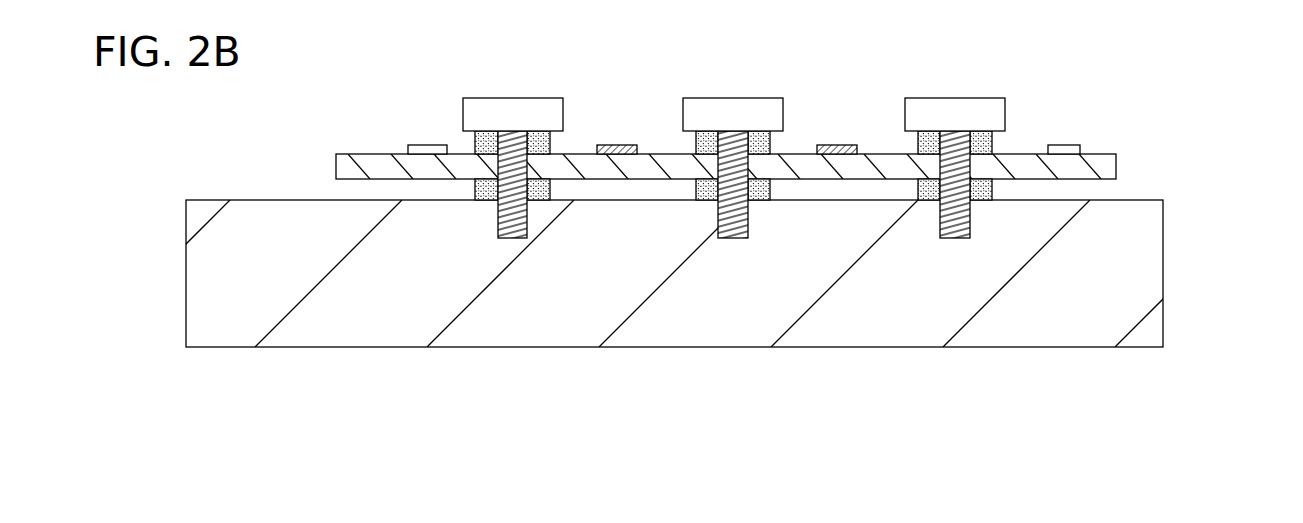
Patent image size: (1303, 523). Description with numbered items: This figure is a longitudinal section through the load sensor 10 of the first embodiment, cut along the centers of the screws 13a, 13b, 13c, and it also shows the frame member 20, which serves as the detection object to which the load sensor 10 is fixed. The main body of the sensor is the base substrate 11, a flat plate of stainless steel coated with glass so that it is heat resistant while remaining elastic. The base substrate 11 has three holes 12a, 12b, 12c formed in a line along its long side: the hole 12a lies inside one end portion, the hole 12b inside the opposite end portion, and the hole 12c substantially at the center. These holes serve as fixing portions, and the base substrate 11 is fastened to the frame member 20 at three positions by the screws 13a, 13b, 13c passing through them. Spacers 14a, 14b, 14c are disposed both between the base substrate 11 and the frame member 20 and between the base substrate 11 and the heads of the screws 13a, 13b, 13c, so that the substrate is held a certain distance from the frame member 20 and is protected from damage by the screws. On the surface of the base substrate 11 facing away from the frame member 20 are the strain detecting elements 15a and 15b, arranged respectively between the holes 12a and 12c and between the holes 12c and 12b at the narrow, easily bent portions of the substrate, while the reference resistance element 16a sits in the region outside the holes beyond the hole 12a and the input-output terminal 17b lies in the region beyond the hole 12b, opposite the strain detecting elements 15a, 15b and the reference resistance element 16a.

The load sensor 10 is at (731, 212).
The base substrate 11 is at (372, 165).
The hole 12a is at (522, 170).
The hole 12b is at (962, 170).
The hole 12c is at (742, 170).
The screw 13a is at (536, 108).
The screw 13b is at (977, 107).
The screw 13c is at (755, 108).
The spacer 14a is at (550, 187).
The spacer 14b is at (993, 187).
The spacer 14c is at (772, 193).
The strain detecting element 15a is at (620, 145).
The strain detecting element 15b is at (840, 145).
The reference resistance element 16a is at (428, 145).
The input-output terminal 17b is at (1043, 78).
The frame member 20 is at (1137, 277).